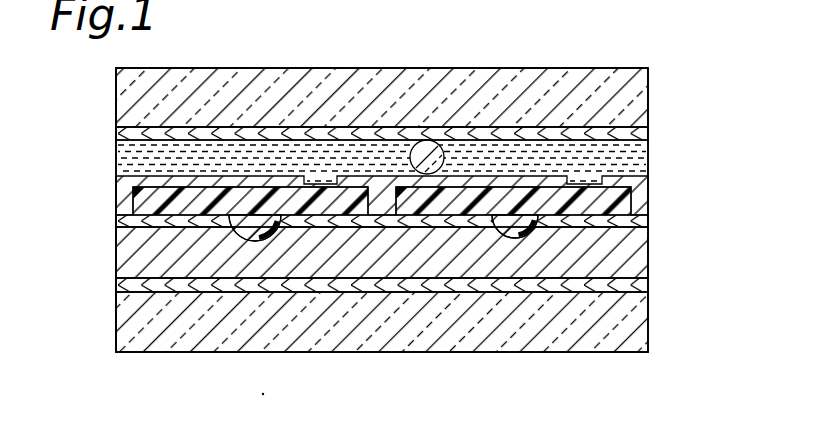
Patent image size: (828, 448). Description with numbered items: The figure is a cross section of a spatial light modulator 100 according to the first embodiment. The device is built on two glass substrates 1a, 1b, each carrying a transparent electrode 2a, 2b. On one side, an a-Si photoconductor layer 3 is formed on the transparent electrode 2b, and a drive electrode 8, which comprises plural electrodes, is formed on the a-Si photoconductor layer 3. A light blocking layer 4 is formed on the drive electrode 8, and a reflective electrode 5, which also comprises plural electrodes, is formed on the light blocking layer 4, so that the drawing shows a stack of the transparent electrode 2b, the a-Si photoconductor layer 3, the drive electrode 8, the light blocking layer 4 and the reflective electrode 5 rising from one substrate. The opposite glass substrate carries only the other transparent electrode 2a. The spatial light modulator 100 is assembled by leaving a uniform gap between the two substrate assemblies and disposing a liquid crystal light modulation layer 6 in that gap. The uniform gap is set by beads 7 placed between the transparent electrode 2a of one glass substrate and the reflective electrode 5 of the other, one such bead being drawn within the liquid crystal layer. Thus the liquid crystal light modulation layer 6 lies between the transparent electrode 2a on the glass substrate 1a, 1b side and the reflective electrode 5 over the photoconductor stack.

The spatial light modulator 100 is at (401, 358).
The glass substrate 1a is at (652, 97).
The glass substrate 1b is at (652, 315).
The transparent electrode 2a is at (652, 128).
The transparent electrode 2b is at (652, 285).
The a-Si photoconductor layer 3 is at (652, 258).
The light blocking layer 4 is at (637, 207).
The reflective electrode 5 is at (652, 187).
The liquid crystal light modulation layer 6 is at (652, 157).
The beads 7 is at (427, 140).
The drive electrode 8 is at (652, 223).